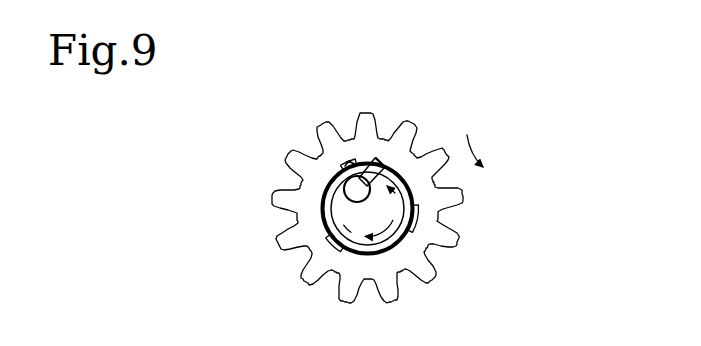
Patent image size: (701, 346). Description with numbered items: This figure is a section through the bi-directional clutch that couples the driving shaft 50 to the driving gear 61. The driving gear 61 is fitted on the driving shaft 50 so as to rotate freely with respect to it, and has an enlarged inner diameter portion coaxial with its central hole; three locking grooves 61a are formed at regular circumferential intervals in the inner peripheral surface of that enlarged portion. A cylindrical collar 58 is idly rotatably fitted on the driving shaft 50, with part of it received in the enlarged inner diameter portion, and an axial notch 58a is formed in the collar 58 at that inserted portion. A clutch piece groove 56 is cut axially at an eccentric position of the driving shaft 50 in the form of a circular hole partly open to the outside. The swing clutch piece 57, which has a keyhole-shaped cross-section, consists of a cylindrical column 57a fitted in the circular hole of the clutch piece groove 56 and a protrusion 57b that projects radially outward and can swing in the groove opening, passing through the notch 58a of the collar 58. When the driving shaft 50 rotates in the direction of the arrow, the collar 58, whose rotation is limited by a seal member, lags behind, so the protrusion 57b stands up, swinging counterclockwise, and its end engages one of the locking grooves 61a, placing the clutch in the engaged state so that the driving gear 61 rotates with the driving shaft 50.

The driving shaft 50 is at (322, 226).
The clutch piece groove 56 is at (416, 194).
The swing clutch piece 57 is at (435, 127).
The cylindrical column 57a is at (378, 175).
The protrusion 57b is at (383, 161).
The collar 58 is at (394, 200).
The notch 58a is at (358, 160).
The driving gear 61 is at (378, 196).
The locking grooves 61a is at (346, 161).